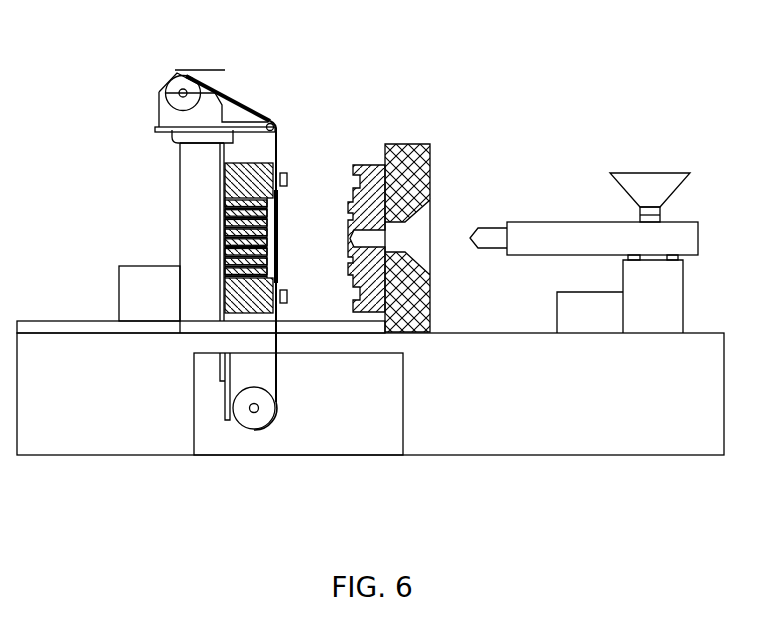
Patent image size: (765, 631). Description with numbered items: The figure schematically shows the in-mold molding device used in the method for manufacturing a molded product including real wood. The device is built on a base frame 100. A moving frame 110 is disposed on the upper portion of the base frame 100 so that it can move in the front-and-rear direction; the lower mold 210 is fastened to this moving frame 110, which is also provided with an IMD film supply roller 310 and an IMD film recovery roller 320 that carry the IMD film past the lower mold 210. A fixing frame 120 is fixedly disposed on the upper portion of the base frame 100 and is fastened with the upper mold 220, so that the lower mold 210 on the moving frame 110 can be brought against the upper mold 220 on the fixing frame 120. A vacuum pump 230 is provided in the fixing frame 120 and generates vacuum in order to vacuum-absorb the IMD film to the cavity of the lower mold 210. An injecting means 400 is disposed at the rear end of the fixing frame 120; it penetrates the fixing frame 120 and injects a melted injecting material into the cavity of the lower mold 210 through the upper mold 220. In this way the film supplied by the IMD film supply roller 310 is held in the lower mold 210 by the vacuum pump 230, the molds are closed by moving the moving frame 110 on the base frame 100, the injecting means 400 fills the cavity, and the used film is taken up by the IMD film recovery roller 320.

The base frame 100 is at (112, 440).
The moving frame 110 is at (188, 212).
The fixing frame 120 is at (405, 143).
The lower mold 210 is at (258, 166).
The upper mold 220 is at (373, 164).
The vacuum pump 230 is at (122, 287).
The IMD film supply roller 310 is at (184, 86).
The IMD film recovery roller 320 is at (254, 430).
The injecting means 400 is at (564, 180).